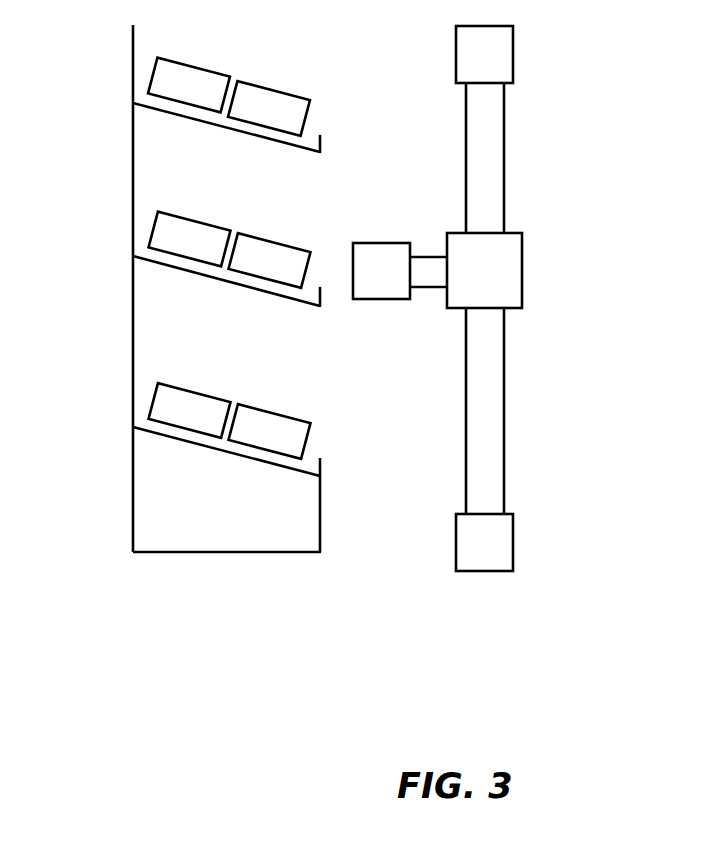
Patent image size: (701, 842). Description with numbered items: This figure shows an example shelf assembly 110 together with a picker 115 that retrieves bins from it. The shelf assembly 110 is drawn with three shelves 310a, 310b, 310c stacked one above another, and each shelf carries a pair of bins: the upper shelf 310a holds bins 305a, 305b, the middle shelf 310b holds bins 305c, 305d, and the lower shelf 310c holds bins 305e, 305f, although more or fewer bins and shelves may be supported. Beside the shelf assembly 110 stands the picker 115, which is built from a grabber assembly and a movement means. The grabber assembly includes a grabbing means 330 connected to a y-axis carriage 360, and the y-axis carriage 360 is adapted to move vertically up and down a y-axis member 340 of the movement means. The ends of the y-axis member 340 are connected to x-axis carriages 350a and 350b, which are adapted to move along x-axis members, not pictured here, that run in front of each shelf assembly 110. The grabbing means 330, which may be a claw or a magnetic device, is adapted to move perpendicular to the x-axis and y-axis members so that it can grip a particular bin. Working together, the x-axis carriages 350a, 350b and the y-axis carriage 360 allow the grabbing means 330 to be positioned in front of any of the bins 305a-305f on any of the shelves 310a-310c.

The shelf assembly 110 is at (201, 592).
The picker 115 is at (464, 642).
The bin 305a is at (189, 85).
The bin 305b is at (269, 108).
The bin 305c is at (190, 239).
The bin 305d is at (270, 260).
The bin 305e is at (190, 410).
The bin 305f is at (270, 431).
The shelf 310a is at (133, 103).
The shelf 310b is at (133, 256).
The shelf 310c is at (133, 427).
The grabbing means 330 is at (373, 284).
The y-axis member 340 is at (494, 378).
The x-axis carriage 350a is at (503, 63).
The x-axis carriage 350b is at (503, 551).
The y-axis carriage 360 is at (503, 266).